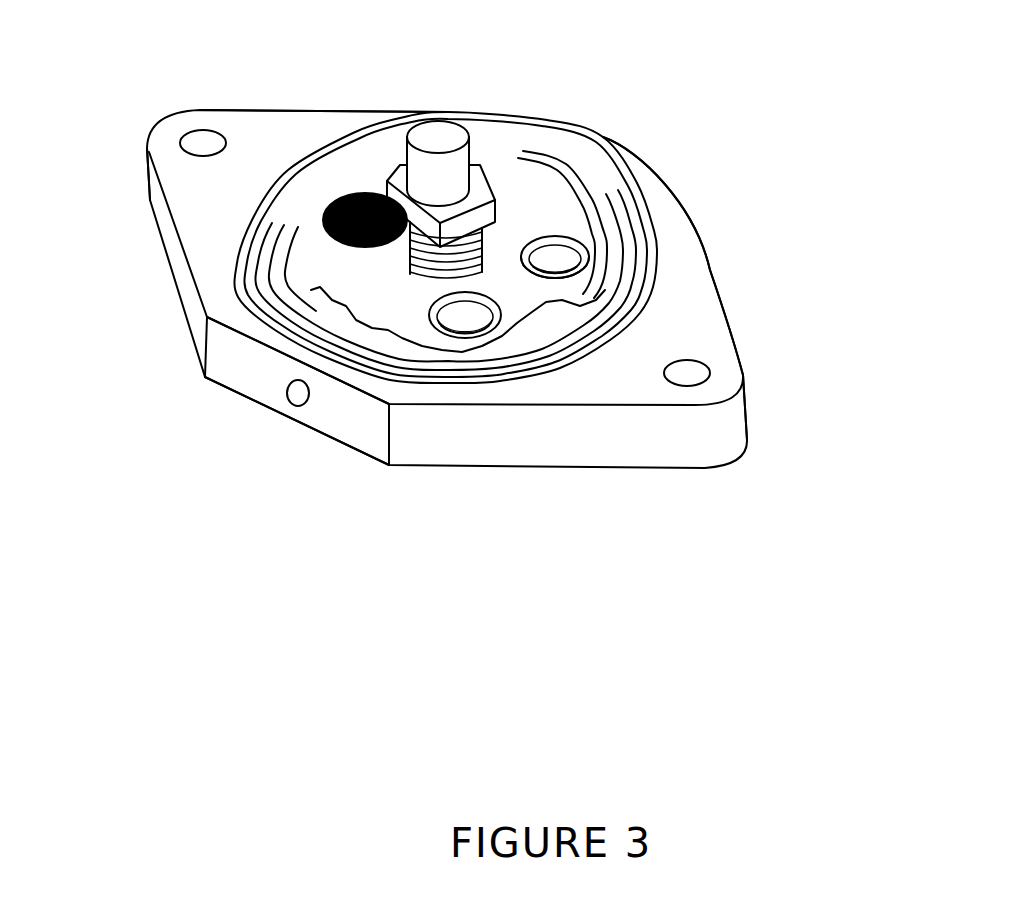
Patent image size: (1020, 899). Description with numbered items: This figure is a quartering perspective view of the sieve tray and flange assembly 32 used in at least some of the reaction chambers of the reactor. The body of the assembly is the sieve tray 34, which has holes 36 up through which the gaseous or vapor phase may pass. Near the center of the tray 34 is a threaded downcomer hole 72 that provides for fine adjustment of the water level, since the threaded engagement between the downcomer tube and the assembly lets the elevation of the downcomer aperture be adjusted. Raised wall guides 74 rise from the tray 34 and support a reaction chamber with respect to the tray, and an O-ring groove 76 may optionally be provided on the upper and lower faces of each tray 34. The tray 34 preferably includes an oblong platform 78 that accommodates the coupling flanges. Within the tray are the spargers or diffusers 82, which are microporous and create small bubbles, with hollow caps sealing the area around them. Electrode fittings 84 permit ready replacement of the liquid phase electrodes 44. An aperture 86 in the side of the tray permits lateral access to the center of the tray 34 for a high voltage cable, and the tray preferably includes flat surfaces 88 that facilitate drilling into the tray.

The sieve tray and flange assembly 32 is at (697, 280).
The sieve tray 34 is at (263, 133).
The holes 36 is at (560, 246).
The liquid phase electrodes 44 is at (438, 134).
The threaded downcomer hole 72 is at (322, 227).
The raised wall guides 74 is at (480, 112).
The O-ring groove 76 is at (655, 210).
The oblong platform 78 is at (747, 328).
The spargers or diffusers 82 is at (540, 285).
The electrode fittings 84 is at (398, 262).
The aperture 86 is at (280, 406).
The flat surfaces 88 is at (230, 362).